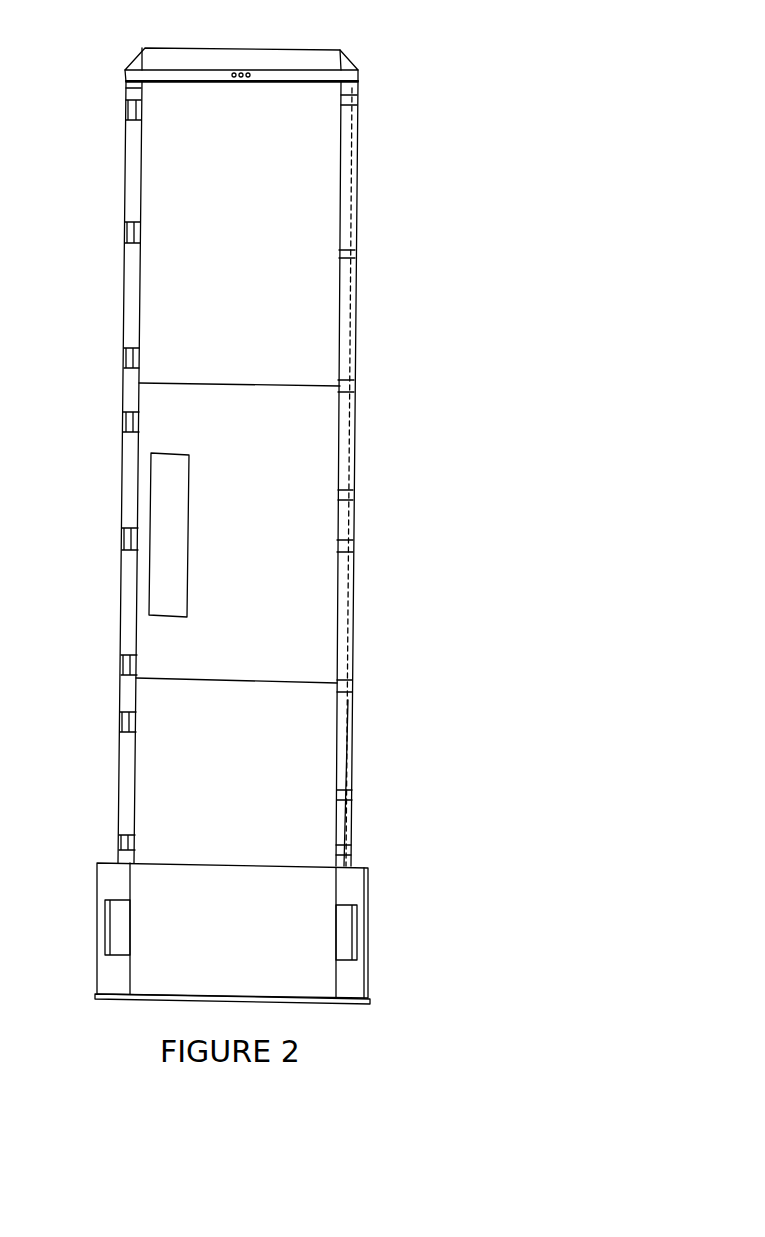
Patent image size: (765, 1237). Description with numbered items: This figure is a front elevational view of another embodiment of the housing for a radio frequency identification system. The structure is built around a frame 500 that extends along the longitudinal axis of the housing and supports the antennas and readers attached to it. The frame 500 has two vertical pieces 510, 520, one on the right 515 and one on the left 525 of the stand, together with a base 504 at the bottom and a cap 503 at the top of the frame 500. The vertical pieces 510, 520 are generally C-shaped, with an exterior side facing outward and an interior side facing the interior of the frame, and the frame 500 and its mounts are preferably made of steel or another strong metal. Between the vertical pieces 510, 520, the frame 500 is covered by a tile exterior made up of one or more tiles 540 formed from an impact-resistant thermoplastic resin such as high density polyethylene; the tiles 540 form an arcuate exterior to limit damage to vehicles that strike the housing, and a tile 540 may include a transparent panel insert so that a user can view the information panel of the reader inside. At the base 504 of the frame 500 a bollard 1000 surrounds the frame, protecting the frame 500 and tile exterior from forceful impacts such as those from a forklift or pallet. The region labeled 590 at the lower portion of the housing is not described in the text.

The bollard 1000 is at (412, 903).
The frame 500 is at (126, 470).
The cap 503 is at (320, 60).
The base 504 is at (318, 1003).
The vertical piece 510 is at (350, 672).
The right side 515 is at (352, 722).
The vertical piece 520 is at (118, 617).
The left side 525 is at (117, 768).
The tile 540 is at (320, 322).
The base 590 is at (152, 965).